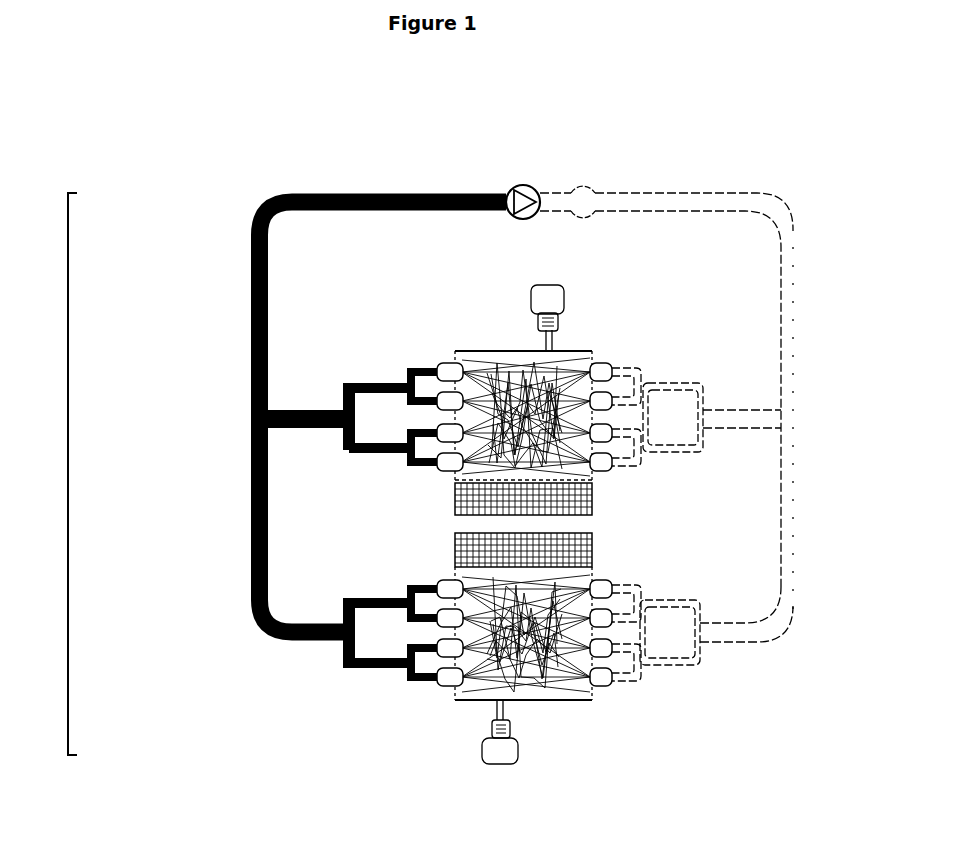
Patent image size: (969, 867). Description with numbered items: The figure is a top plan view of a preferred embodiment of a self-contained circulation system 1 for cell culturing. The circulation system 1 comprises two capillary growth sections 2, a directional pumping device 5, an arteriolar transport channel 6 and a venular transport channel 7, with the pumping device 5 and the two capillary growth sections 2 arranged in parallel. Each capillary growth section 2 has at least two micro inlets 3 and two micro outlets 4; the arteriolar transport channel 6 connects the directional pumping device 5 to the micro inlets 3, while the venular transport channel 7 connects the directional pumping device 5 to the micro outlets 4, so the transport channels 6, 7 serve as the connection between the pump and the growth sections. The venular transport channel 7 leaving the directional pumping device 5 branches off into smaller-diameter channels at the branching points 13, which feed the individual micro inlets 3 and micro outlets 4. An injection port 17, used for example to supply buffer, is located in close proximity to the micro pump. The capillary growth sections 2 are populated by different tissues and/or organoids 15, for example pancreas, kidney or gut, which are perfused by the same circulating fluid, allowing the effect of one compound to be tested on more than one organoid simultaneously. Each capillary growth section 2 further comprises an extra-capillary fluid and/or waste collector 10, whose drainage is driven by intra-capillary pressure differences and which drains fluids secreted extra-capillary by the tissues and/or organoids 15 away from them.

The circulation system 1 is at (68, 475).
The capillary growth section 2 is at (450, 572).
The micro inlets 3 is at (596, 360).
The micro outlets 4 is at (446, 360).
The directional pumping device 5 is at (512, 183).
The arteriolar transport channel 6 is at (792, 221).
The venular transport channel 7 is at (252, 246).
The extra-capillary fluid and/or waste collector 10 is at (476, 748).
The branching points 13 is at (336, 430).
The tissues and/or organoids 15 is at (560, 598).
The injection port 17 is at (613, 170).